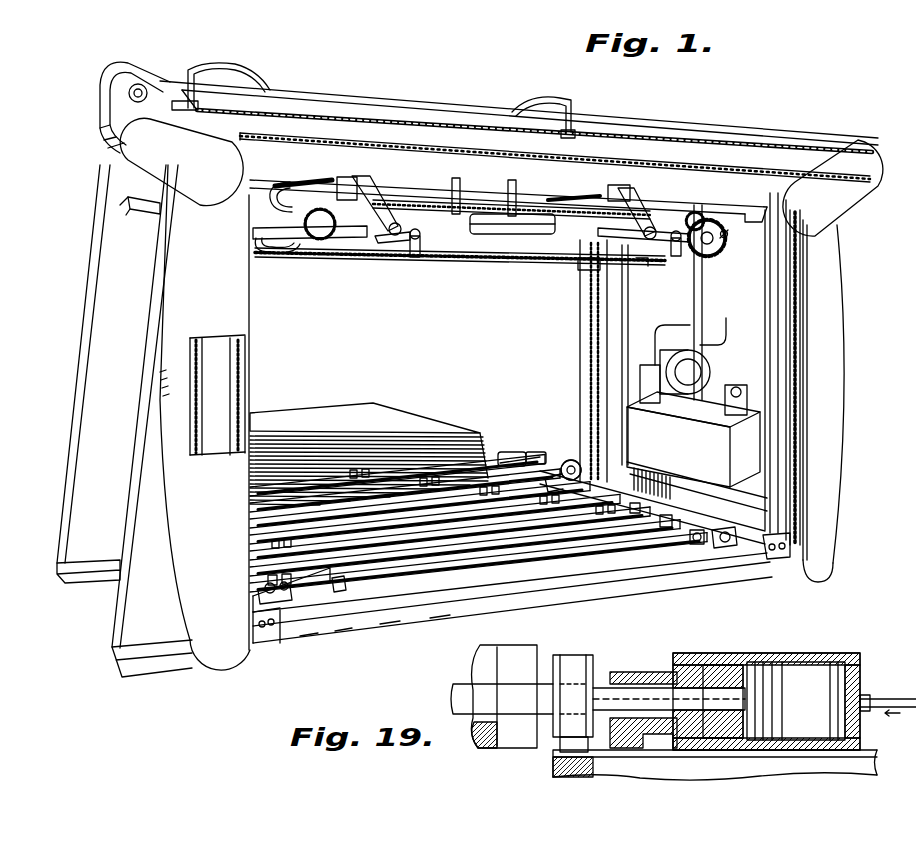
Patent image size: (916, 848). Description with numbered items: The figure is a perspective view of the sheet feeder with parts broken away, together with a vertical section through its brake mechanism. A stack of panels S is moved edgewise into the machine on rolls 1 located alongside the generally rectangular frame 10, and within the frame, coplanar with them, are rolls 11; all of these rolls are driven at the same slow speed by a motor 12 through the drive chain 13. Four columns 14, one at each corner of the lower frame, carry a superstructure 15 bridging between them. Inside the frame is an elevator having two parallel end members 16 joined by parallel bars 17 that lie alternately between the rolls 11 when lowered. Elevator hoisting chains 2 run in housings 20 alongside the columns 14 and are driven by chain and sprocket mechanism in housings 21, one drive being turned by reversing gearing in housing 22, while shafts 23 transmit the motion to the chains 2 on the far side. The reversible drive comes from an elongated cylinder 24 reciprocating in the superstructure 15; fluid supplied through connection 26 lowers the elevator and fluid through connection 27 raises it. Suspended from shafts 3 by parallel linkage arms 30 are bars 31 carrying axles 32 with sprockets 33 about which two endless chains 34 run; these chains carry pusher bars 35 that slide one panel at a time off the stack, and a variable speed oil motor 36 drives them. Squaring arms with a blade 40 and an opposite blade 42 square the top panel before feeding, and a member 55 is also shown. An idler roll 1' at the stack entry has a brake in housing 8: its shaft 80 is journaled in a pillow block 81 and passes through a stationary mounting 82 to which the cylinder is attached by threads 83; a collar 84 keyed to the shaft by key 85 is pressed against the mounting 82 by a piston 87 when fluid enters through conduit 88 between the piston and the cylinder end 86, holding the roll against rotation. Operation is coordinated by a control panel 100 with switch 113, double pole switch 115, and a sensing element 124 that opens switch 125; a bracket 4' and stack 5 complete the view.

In FIG. 1, the rolls 1 is at (520, 443).
In FIG. 1, the idler roll 1' is at (519, 524).
In FIG. 19, the idler roll 1' is at (508, 695).
In FIG. 1, the elevator hoisting chains 2 is at (226, 452).
In FIG. 1, the shafts 3 is at (296, 184).
In FIG. 1, the bracket 4' is at (630, 273).
In FIG. 1, the sheet stack 5 is at (436, 416).
In FIG. 1, the brake housing 8 is at (530, 458).
In FIG. 19, the brake housing 8 is at (790, 656).
In FIG. 1, the frame 10 is at (338, 642).
In FIG. 1, the rolls 11 is at (412, 594).
In FIG. 1, the motor 12 is at (570, 460).
In FIG. 1, the drive chain 13 is at (735, 550).
In FIG. 1, the columns 14 is at (124, 353).
In FIG. 1, the superstructure 15 is at (700, 152).
In FIG. 1, the end members 16 is at (690, 510).
In FIG. 1, the bars 17 is at (270, 578).
In FIG. 1, the housings 20 is at (224, 297).
In FIG. 1, the housings 21 is at (202, 180).
In FIG. 1, the housing 22 is at (102, 120).
In FIG. 1, the shafts 23 is at (735, 210).
In FIG. 1, the cylinder 24 is at (395, 120).
In FIG. 1, the connection 26 is at (234, 78).
In FIG. 1, the connection 27 is at (556, 108).
In FIG. 1, the parallel linkage arms 30 is at (364, 190).
In FIG. 1, the bars 31 is at (622, 251).
In FIG. 1, the axles 32 is at (718, 248).
In FIG. 1, the sprockets 33 is at (318, 252).
In FIG. 1, the endless chains 34 is at (428, 262).
In FIG. 1, the pusher bars 35 is at (730, 228).
In FIG. 1, the oil motor 36 is at (456, 185).
In FIG. 1, the blade 40 is at (412, 260).
In FIG. 1, the blade 42 is at (582, 270).
In FIG. 1, the cylinder 55 is at (496, 212).
In FIG. 19, the shaft 80 is at (455, 692).
In FIG. 19, the pillow block 81 is at (566, 656).
In FIG. 19, the stationary mounting 82 is at (636, 672).
In FIG. 19, the threads 83 is at (694, 660).
In FIG. 19, the collar 84 is at (710, 710).
In FIG. 19, the key 85 is at (730, 666).
In FIG. 19, the end 86 is at (854, 664).
In FIG. 19, the piston 87 is at (796, 701).
In FIG. 19, the conduit 88 is at (896, 698).
In FIG. 1, the control panel 100 is at (668, 340).
In FIG. 1, the switch 113 is at (555, 478).
In FIG. 1, the double pole switch 115 is at (342, 592).
In FIG. 1, the sensing element 124 is at (254, 240).
In FIG. 1, the switch 125 is at (278, 182).